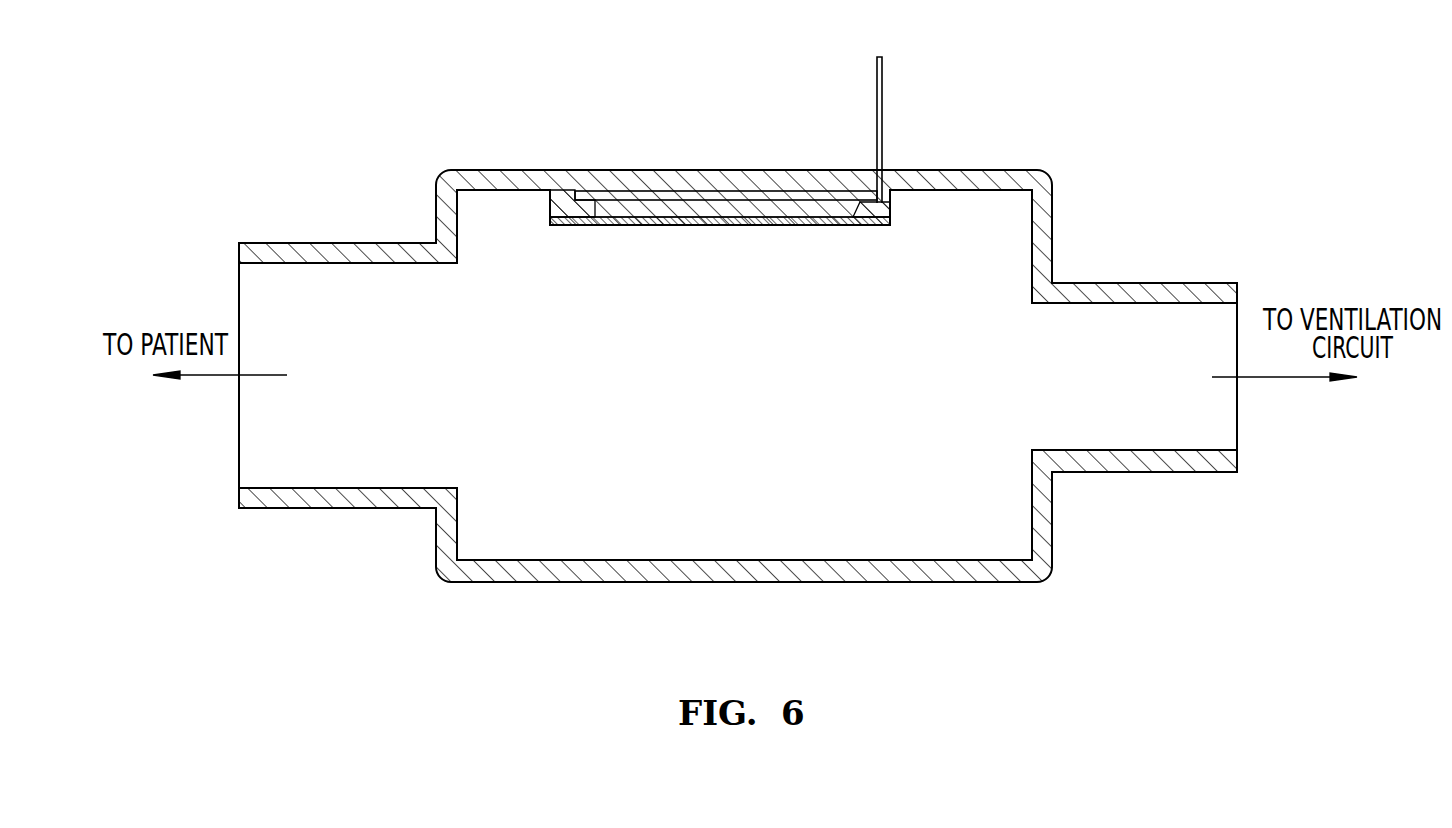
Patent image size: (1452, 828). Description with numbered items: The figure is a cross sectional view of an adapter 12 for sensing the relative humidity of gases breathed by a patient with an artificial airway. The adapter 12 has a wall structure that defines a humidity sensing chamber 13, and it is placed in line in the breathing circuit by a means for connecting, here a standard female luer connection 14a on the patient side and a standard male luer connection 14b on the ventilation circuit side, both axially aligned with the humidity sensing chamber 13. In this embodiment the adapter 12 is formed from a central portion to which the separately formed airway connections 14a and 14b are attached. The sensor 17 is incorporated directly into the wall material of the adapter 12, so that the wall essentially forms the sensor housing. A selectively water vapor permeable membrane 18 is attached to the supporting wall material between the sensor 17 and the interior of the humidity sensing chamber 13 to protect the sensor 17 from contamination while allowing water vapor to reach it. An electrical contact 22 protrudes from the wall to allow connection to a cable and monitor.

The adapter 12 is at (548, 592).
The humidity sensing chamber 13 is at (832, 535).
The female luer connection 14a is at (292, 478).
The male luer connection 14b is at (1150, 320).
The sensor 17 is at (667, 196).
The selectively water vapor permeable membrane 18 is at (722, 228).
The electrical contact 22 is at (883, 78).